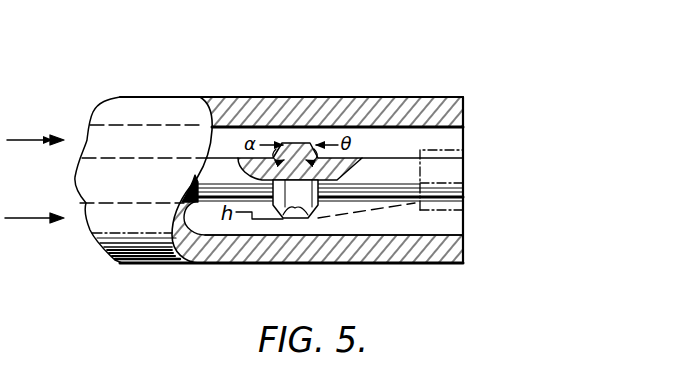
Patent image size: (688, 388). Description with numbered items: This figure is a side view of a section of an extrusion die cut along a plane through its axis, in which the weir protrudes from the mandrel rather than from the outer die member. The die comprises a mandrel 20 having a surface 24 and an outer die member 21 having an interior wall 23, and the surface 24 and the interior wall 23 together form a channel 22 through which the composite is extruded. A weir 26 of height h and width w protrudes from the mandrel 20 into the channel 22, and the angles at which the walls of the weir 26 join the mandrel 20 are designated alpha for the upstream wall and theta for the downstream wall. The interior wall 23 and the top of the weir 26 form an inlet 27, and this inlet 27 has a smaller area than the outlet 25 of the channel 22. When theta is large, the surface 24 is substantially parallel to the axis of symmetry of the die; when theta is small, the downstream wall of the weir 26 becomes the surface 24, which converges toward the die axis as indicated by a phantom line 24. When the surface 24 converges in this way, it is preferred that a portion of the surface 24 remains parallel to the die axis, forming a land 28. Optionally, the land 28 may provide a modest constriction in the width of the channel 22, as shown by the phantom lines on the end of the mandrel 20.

The mandrel 20 is at (463, 178).
The outer die member 21 is at (463, 103).
The channel 22 is at (415, 222).
The interior wall 23 is at (380, 128).
The surface 24 is at (388, 158).
The outlet 25 is at (453, 137).
The weir 26 is at (306, 140).
The inlet 27 is at (290, 140).
The land 28 is at (428, 205).